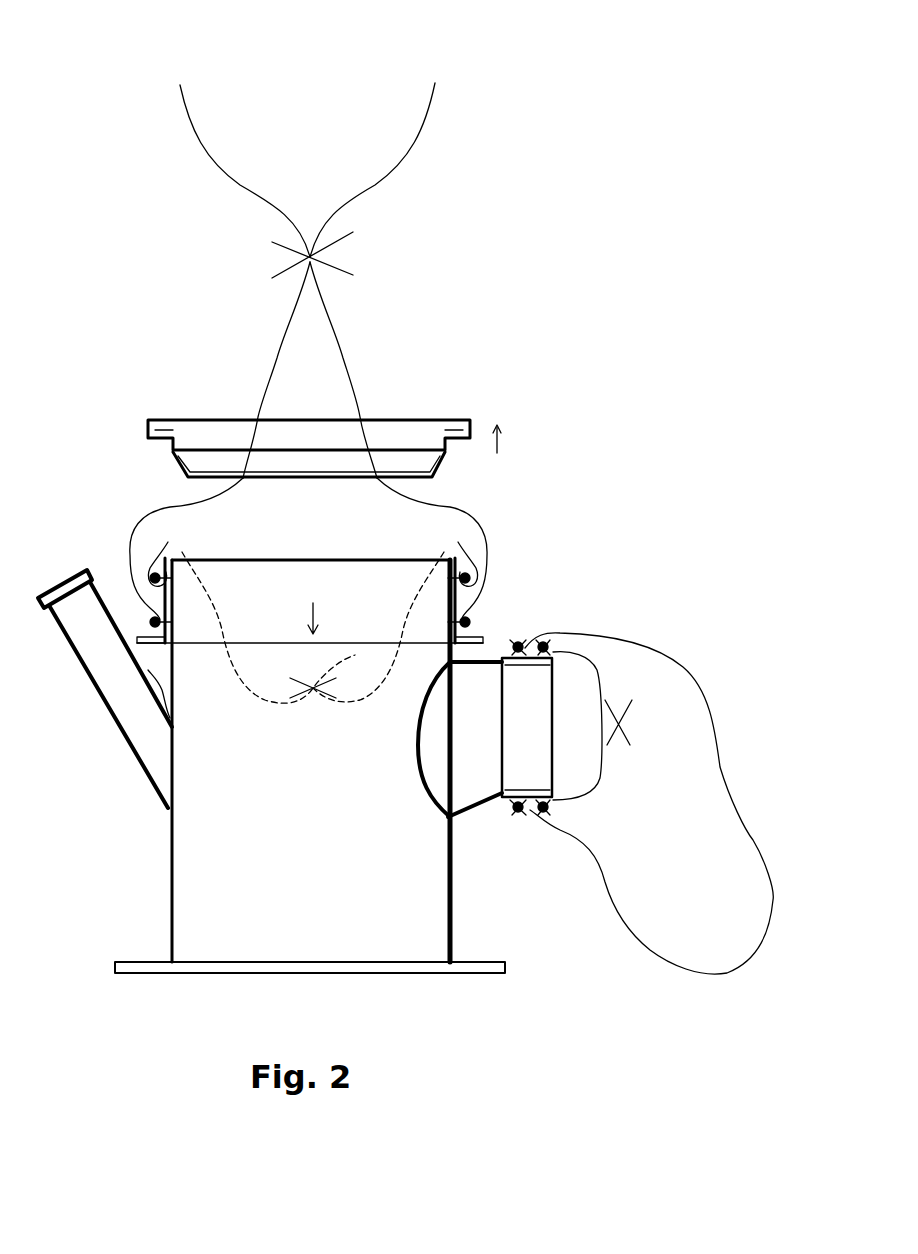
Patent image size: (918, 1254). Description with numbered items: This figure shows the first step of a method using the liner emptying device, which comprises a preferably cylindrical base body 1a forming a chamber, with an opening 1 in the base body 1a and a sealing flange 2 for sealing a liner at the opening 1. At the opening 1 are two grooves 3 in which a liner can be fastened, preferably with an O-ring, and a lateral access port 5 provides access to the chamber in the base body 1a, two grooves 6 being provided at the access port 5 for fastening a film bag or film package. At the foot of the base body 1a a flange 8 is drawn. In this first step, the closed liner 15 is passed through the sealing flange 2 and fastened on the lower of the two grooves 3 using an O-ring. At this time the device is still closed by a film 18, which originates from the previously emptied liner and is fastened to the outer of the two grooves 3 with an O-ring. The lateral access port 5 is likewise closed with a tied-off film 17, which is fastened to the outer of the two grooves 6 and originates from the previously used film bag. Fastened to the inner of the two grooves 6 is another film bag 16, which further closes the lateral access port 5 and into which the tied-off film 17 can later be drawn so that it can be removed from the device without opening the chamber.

The opening 1 is at (168, 518).
The base body 1a is at (162, 880).
The sealing flange 2 is at (475, 417).
The grooves 3 is at (467, 617).
The access port 5 is at (475, 813).
The grooves 6 is at (563, 625).
The bottom flange 8 is at (483, 975).
The closed liner 15 is at (348, 342).
The film bag 16 is at (717, 735).
The tied-off film 17 is at (603, 780).
The film 18 is at (252, 693).